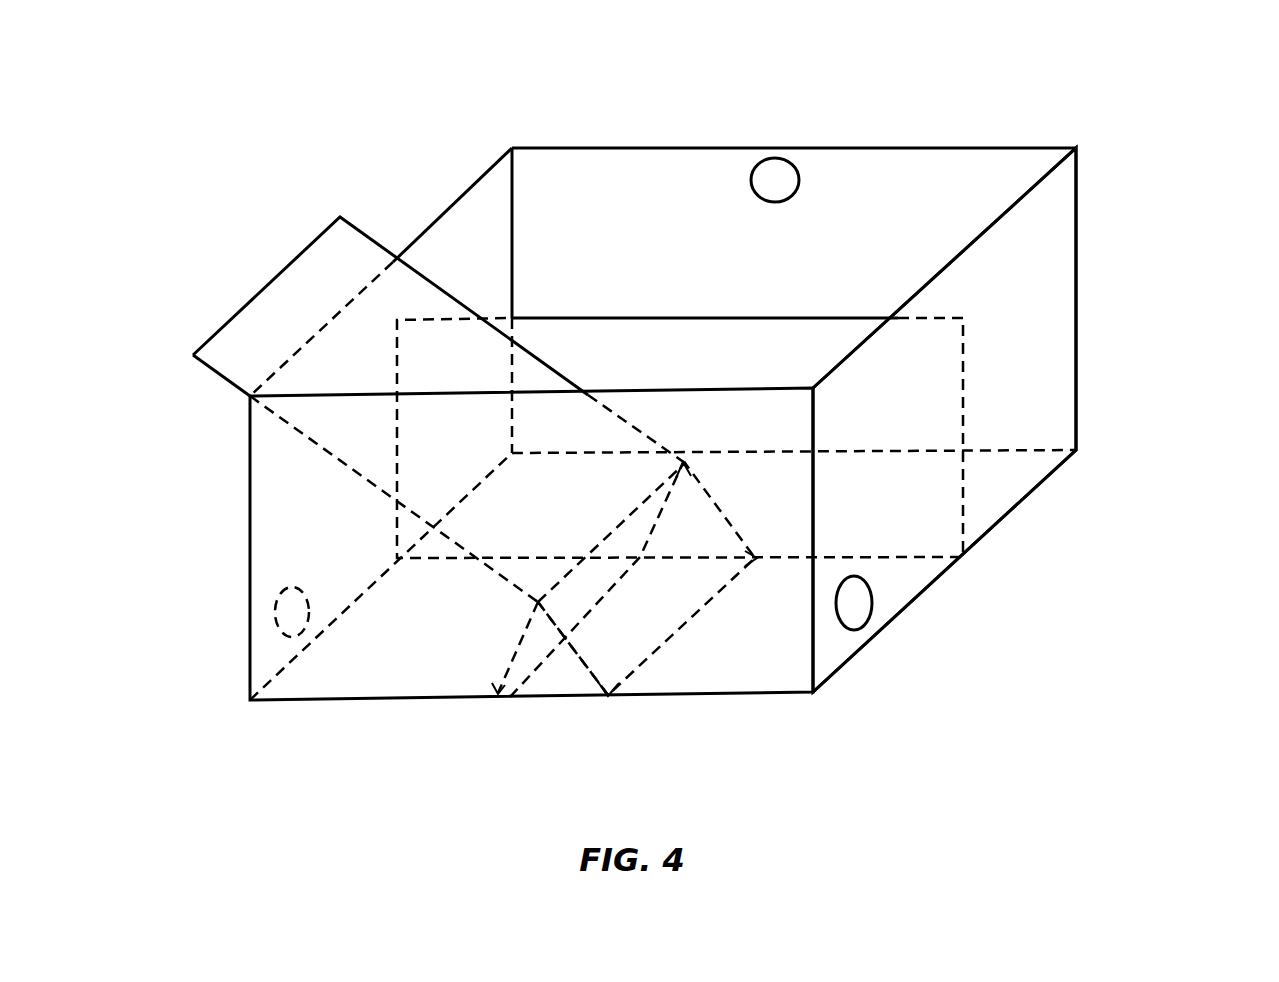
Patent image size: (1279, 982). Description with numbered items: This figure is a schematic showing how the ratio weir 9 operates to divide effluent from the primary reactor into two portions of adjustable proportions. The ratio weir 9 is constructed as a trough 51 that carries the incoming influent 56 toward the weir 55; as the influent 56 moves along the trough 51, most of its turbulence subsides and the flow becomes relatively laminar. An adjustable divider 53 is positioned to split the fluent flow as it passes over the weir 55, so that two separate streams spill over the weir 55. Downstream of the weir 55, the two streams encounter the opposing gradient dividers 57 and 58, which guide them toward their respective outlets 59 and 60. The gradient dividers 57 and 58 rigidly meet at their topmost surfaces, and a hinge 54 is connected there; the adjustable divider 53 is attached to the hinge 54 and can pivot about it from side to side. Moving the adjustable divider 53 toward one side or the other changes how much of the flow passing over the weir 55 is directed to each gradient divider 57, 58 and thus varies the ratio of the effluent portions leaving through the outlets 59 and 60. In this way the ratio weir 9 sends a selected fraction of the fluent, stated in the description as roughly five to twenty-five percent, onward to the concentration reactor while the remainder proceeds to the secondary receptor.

The ratio weir 9 is at (1076, 147).
The trough 51 is at (625, 252).
The adjustable divider 53 is at (200, 364).
The hinge 54 is at (623, 522).
The weir 55 is at (708, 318).
The influent 56 is at (793, 164).
The gradient divider 57 is at (507, 670).
The gradient divider 58 is at (592, 675).
The outlet 59 is at (278, 630).
The outlet 60 is at (872, 608).